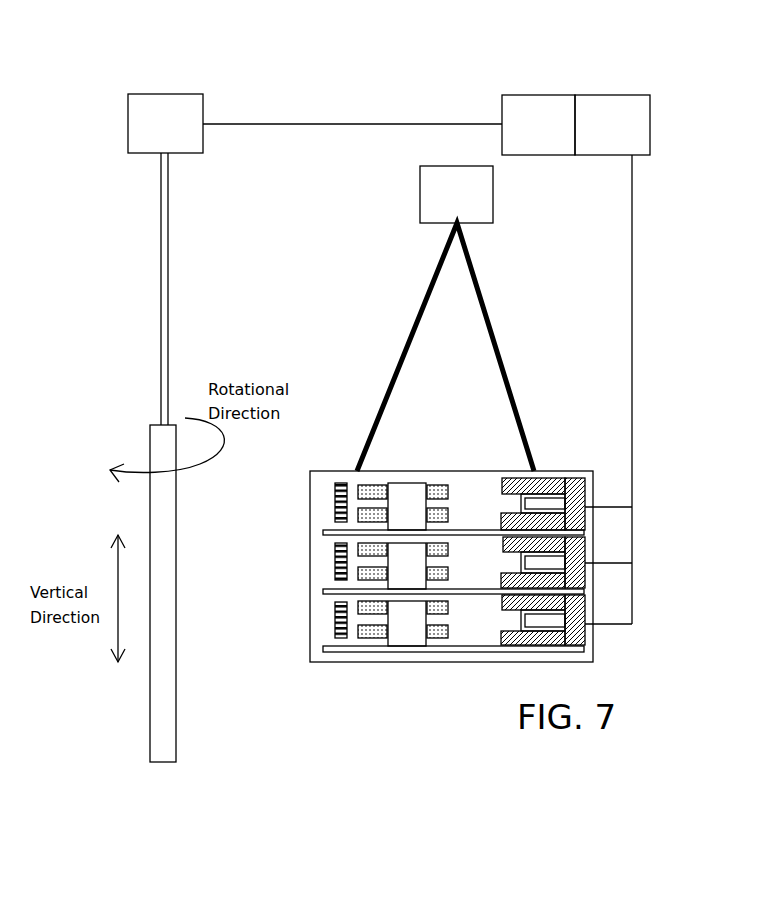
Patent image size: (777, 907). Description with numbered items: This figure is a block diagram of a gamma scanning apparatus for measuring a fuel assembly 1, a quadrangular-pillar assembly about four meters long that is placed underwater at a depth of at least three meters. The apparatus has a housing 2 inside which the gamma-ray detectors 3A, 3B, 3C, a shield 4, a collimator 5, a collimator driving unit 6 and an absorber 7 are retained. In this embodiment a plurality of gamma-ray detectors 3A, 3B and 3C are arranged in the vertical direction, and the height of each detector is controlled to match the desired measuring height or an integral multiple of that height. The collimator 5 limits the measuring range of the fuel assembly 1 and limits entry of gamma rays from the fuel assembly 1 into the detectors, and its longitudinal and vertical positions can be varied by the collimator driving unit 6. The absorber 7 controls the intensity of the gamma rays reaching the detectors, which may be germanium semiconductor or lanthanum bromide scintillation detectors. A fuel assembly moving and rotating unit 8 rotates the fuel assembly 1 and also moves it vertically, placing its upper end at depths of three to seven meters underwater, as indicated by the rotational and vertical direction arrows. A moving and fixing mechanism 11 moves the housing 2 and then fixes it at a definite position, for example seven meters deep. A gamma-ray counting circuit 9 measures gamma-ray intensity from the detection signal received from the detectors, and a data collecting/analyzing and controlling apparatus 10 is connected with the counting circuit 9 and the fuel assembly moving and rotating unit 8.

The fuel assembly 1 is at (165, 729).
The housing 2 is at (448, 471).
The gamma-ray detector 3A is at (558, 505).
The gamma-ray detector 3B is at (572, 548).
The gamma-ray detector 3C is at (575, 605).
The shield 4 is at (543, 479).
The collimator 5 is at (378, 485).
The collimator driving unit 6 is at (407, 503).
The absorber 7 is at (345, 485).
The fuel assembly moving and rotating unit 8 is at (176, 136).
The gamma-ray counting circuit 9 is at (624, 130).
The data collecting/analyzing and controlling apparatus 10 is at (527, 118).
The moving and fixing mechanism 11 is at (465, 203).